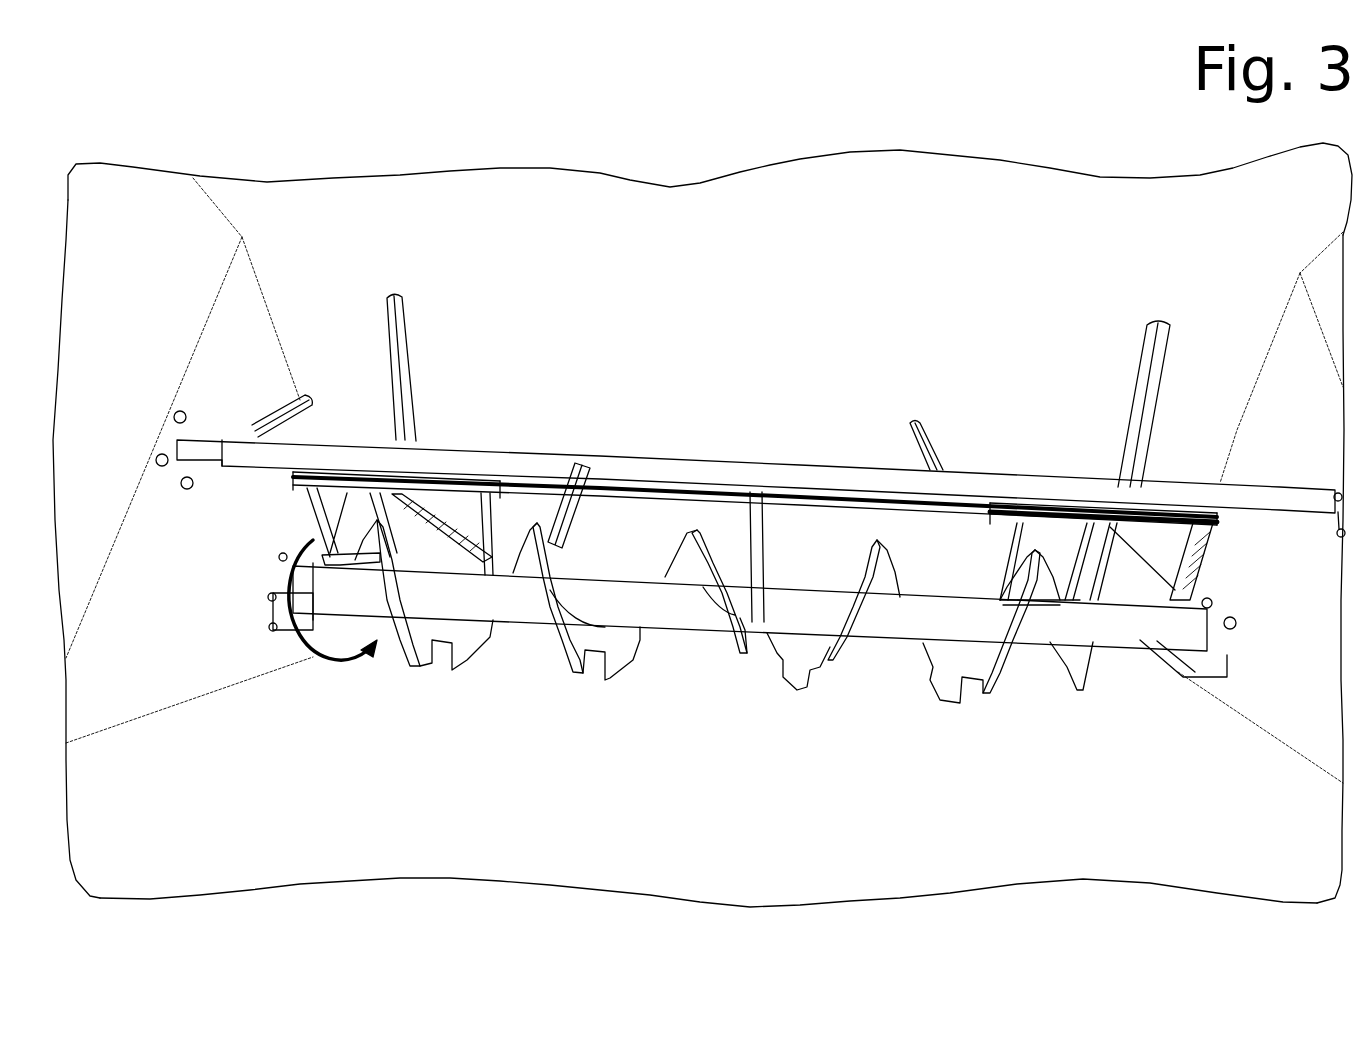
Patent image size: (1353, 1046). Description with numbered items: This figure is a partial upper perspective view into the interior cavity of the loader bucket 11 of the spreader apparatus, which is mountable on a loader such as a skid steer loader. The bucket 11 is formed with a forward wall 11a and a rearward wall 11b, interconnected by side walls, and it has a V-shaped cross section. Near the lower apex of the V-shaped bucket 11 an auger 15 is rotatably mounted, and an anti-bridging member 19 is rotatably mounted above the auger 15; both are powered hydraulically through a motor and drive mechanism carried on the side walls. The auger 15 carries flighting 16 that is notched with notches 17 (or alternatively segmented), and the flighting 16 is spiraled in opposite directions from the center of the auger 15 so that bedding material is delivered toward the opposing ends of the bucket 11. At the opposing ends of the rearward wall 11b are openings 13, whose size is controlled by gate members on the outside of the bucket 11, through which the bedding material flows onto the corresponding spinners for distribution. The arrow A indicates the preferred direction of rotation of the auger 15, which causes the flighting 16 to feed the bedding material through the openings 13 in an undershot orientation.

The loader bucket 11 is at (1005, 145).
The forward wall 11a is at (855, 857).
The rearward wall 11b is at (490, 217).
The opening 13 is at (340, 515).
The auger 15 is at (670, 620).
The flighting 16 is at (992, 653).
The notch 17 is at (440, 643).
The anti-bridging member 19 is at (726, 473).
The arrow A is at (323, 668).